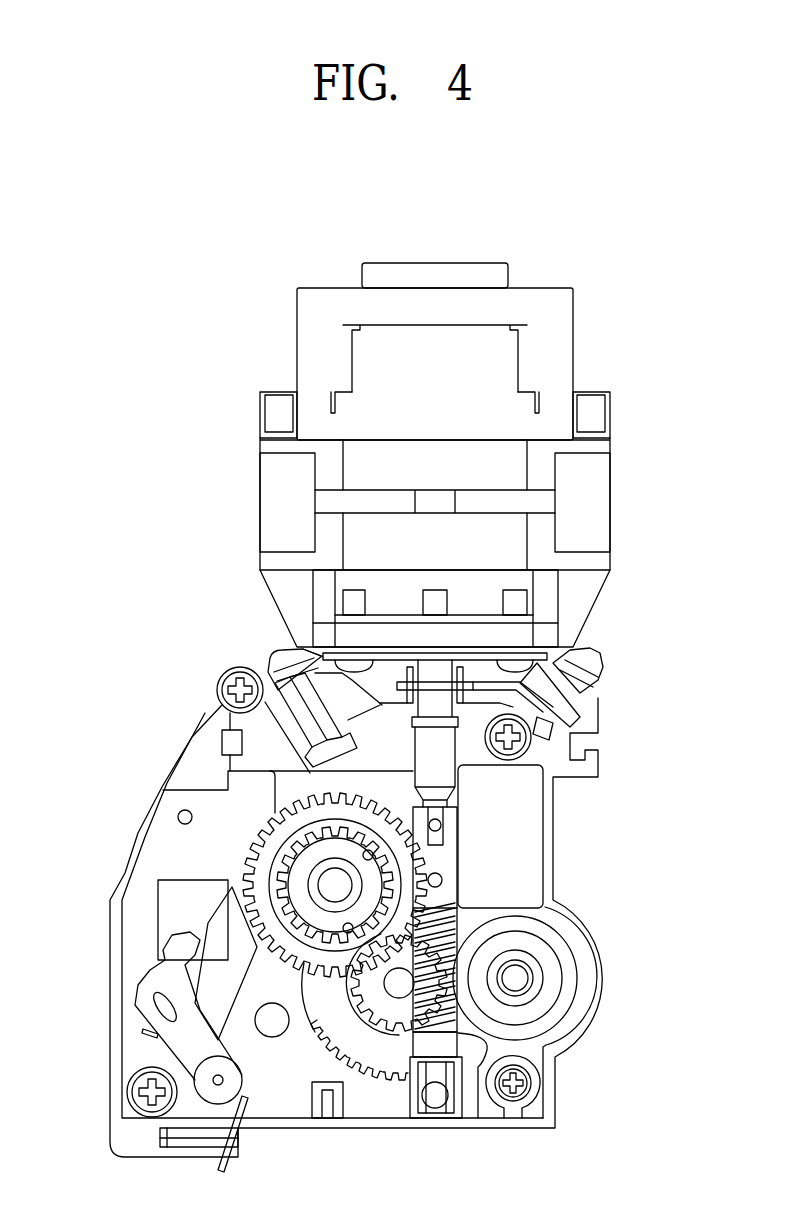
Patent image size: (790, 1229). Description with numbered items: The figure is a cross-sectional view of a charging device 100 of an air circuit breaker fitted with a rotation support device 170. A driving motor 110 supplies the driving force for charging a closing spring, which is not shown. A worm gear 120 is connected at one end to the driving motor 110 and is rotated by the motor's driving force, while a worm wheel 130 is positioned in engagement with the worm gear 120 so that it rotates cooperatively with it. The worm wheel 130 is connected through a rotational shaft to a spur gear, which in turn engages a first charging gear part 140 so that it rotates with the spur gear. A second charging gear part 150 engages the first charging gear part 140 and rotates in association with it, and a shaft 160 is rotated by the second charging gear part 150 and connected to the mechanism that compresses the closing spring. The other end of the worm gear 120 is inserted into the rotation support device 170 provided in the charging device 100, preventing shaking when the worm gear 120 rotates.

The charging device 100 is at (113, 278).
The driving motor 110 is at (565, 348).
The worm gear 120 is at (452, 853).
The worm wheel 130 is at (557, 978).
The first charging gear part 140 is at (377, 1048).
The second charging gear part 150 is at (277, 963).
The shaft 160 is at (330, 887).
The rotation support device 170 is at (435, 1110).